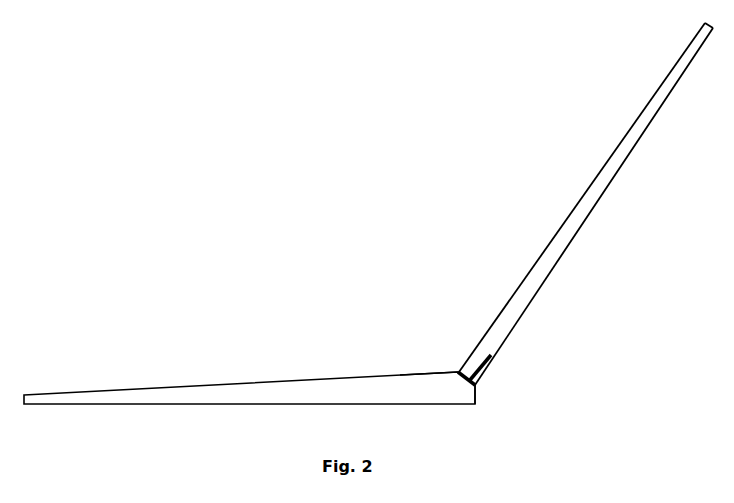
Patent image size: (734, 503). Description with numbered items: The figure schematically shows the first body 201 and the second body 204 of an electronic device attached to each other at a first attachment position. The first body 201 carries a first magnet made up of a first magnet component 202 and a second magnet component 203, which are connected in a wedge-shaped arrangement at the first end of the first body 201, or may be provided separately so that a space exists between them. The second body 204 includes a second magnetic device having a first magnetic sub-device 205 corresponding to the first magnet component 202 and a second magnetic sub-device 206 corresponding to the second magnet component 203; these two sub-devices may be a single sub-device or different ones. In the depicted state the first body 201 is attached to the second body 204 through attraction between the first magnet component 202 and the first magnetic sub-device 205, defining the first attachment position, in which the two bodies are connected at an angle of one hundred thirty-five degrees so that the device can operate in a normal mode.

The first body 201 is at (150, 390).
The first magnet component 202 is at (478, 383).
The second magnet component 203 is at (438, 371).
The second body 204 is at (578, 213).
The first magnetic sub-device 205 is at (479, 380).
The second magnetic sub-device 206 is at (466, 368).